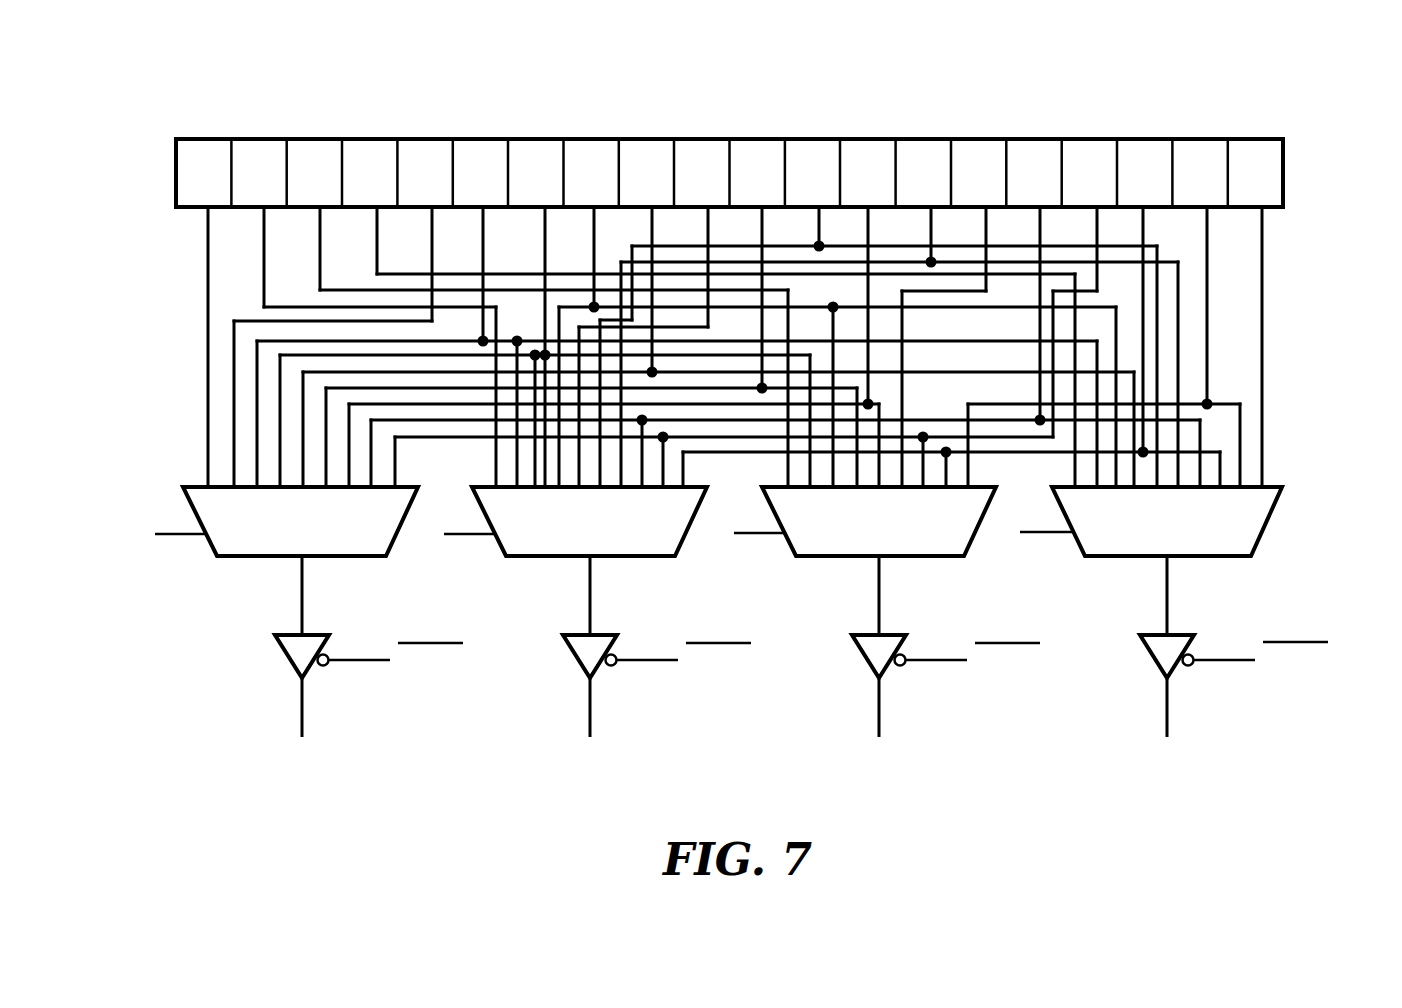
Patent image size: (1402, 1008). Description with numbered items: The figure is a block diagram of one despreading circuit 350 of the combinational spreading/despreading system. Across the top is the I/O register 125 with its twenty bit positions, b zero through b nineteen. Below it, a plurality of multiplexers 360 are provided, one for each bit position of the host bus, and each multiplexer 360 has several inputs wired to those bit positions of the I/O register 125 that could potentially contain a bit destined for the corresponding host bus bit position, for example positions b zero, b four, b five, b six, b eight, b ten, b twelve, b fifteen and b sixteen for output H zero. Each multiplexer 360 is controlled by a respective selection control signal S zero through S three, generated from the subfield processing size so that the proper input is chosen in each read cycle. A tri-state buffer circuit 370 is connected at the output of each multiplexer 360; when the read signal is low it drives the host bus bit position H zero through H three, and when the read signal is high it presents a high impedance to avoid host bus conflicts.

The I/O register 125 is at (176, 176).
The despreading circuit 350 is at (1327, 426).
The multiplexer 360 is at (703, 547).
The tri-state buffer circuit 370 is at (774, 665).